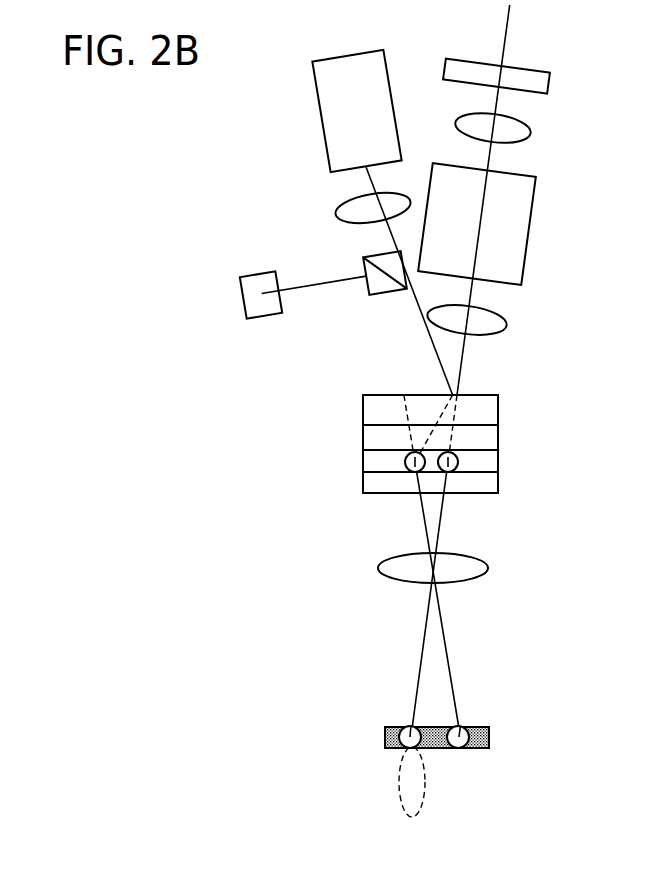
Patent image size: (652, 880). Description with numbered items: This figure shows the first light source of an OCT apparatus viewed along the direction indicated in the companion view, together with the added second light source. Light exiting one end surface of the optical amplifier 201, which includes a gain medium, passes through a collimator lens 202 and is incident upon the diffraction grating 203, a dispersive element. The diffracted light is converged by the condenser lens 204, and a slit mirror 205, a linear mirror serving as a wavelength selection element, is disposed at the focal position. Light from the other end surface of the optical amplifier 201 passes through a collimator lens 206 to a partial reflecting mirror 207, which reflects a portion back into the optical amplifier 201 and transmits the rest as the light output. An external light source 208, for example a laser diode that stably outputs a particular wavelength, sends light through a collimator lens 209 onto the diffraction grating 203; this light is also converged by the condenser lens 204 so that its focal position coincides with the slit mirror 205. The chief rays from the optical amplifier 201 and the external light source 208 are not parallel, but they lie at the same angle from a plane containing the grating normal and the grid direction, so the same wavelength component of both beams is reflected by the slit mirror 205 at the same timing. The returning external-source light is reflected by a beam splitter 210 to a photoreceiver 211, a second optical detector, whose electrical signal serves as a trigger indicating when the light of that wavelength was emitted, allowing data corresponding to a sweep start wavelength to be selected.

The optical amplifier 201 is at (529, 235).
The collimator lens 202 is at (508, 322).
The diffraction grating 203 is at (499, 488).
The condenser lens 204 is at (378, 568).
The slit mirror 205 is at (490, 739).
The collimator lens 206 is at (531, 131).
The partial reflecting mirror 207 is at (550, 80).
The external light source 208 is at (316, 93).
The collimator lens 209 is at (337, 210).
The beam splitter 210 is at (368, 292).
The photoreceiver 211 is at (241, 293).